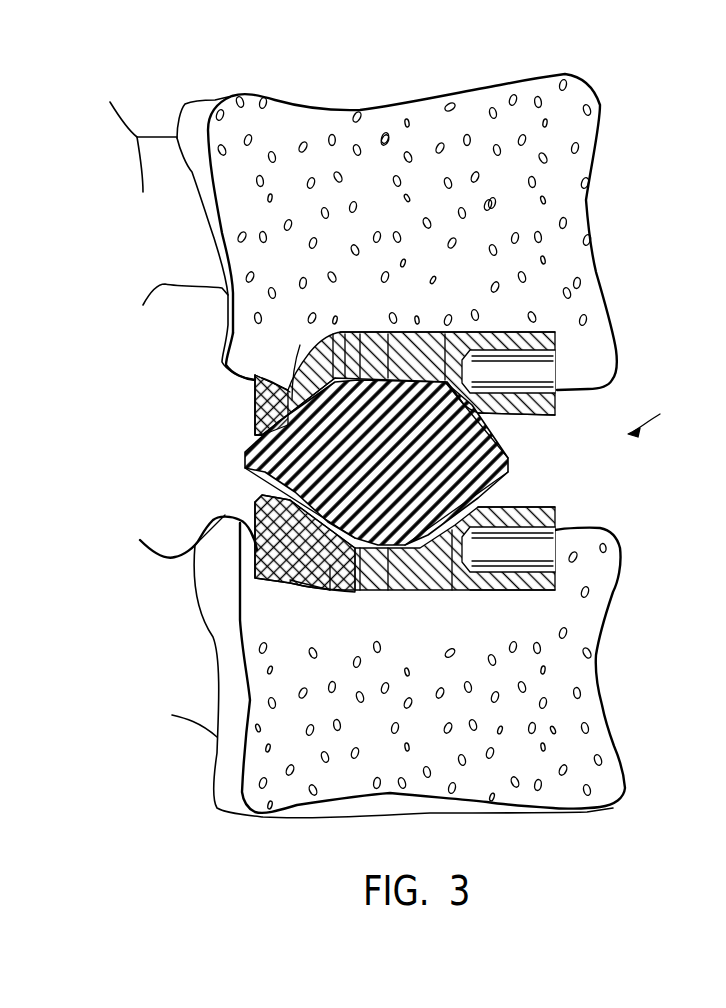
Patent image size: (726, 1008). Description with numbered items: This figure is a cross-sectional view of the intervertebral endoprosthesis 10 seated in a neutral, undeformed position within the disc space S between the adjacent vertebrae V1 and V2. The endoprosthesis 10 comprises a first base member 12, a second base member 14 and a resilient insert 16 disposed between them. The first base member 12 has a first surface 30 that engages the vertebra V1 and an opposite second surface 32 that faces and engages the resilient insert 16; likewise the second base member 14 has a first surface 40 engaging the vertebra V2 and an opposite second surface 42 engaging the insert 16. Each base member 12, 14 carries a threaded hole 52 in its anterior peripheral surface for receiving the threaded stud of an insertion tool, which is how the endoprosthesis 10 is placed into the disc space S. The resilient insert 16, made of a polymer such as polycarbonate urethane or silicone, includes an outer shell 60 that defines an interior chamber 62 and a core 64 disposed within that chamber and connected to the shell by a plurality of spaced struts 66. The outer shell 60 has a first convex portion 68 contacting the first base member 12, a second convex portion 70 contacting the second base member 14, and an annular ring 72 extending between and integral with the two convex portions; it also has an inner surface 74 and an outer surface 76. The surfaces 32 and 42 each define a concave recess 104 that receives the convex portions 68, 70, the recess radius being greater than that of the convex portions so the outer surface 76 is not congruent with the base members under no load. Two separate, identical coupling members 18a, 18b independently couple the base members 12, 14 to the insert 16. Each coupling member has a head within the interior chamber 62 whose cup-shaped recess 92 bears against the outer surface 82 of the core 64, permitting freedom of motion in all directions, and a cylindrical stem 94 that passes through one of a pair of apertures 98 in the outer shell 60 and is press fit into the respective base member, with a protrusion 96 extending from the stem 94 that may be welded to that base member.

The intervertebral endoprosthesis 10 is at (416, 455).
The first base member 12 is at (464, 357).
The second base member 14 is at (414, 555).
The resilient insert 16 is at (369, 511).
The coupling member 18a is at (407, 333).
The coupling member 18b is at (417, 592).
The first surface 30 is at (446, 382).
The second surface 32 is at (515, 420).
The first surface 40 is at (523, 590).
The second surface 42 is at (473, 508).
The threaded hole 52 is at (555, 374).
The outer shell 60 is at (472, 330).
The interior chamber 62 is at (445, 486).
The core 64 is at (333, 378).
The struts 66 is at (261, 437).
The first convex portion 68 is at (257, 392).
The second convex portion 70 is at (204, 584).
The annular ring 72 is at (250, 476).
The inner surface 74 is at (496, 443).
The outer surface 76 is at (298, 572).
The outer surface 82 is at (297, 397).
The cup-shaped recess 92 is at (453, 590).
The stem 94 is at (337, 592).
The protrusion 96 is at (368, 333).
The apertures 98 is at (305, 578).
The concave recess 104 is at (290, 392).
The disc space S is at (649, 416).
The vertebra V1 is at (603, 120).
The vertebra V2 is at (614, 745).